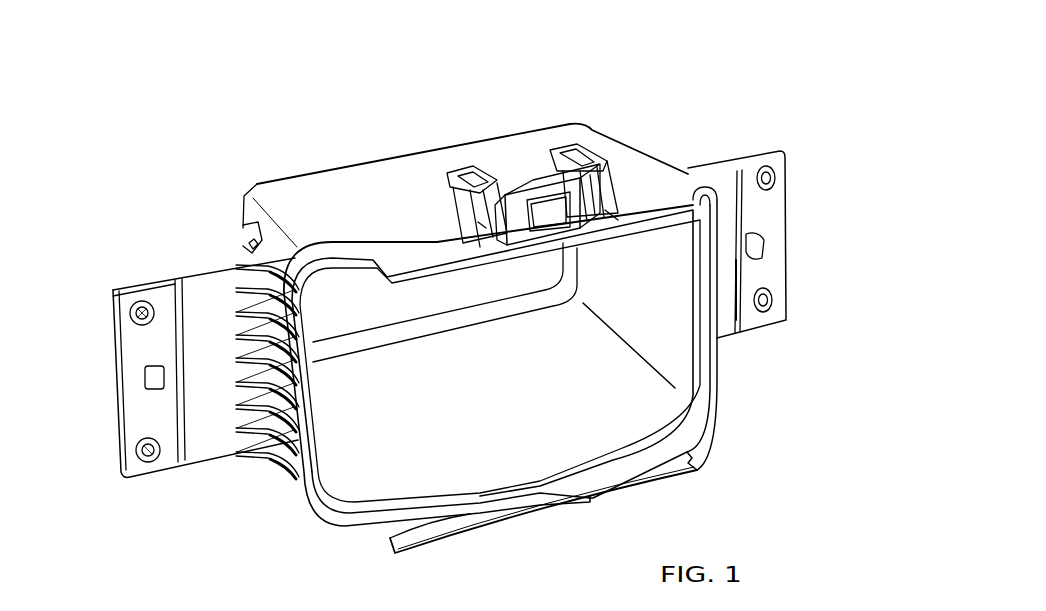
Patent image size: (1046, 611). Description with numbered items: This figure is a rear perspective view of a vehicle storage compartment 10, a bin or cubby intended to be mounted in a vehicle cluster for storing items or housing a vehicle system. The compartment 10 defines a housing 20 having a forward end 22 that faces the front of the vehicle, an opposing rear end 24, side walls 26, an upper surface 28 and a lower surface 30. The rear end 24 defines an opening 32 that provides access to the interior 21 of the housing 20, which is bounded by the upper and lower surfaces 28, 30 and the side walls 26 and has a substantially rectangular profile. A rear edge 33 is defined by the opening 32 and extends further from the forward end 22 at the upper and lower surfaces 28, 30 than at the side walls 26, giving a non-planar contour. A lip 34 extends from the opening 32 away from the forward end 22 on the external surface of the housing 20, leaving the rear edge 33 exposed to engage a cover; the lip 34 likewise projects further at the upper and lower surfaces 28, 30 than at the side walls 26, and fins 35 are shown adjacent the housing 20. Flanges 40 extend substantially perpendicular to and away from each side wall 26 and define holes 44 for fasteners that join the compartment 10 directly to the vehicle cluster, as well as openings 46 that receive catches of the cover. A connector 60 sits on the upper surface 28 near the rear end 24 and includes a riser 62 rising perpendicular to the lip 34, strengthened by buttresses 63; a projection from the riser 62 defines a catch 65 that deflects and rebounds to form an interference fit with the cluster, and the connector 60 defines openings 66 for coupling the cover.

The vehicle storage compartment 10 is at (663, 84).
The housing 20 is at (420, 146).
The interior 21 is at (587, 382).
The forward end 22 is at (357, 297).
The rear end 24 is at (550, 458).
The side walls 26 is at (715, 405).
The upper surface 28 is at (332, 197).
The lower surface 30 is at (500, 402).
The opening 32 is at (360, 482).
The rear edge 33 is at (500, 500).
The lip 34 is at (400, 537).
The fins 35 is at (447, 540).
The flanges 40 is at (162, 338).
The holes 44 is at (138, 314).
The openings 46 is at (157, 384).
The connector 60 is at (530, 178).
The riser 62 is at (510, 194).
The buttresses 63 is at (483, 220).
The catch 65 is at (470, 170).
The openings 66 is at (603, 207).